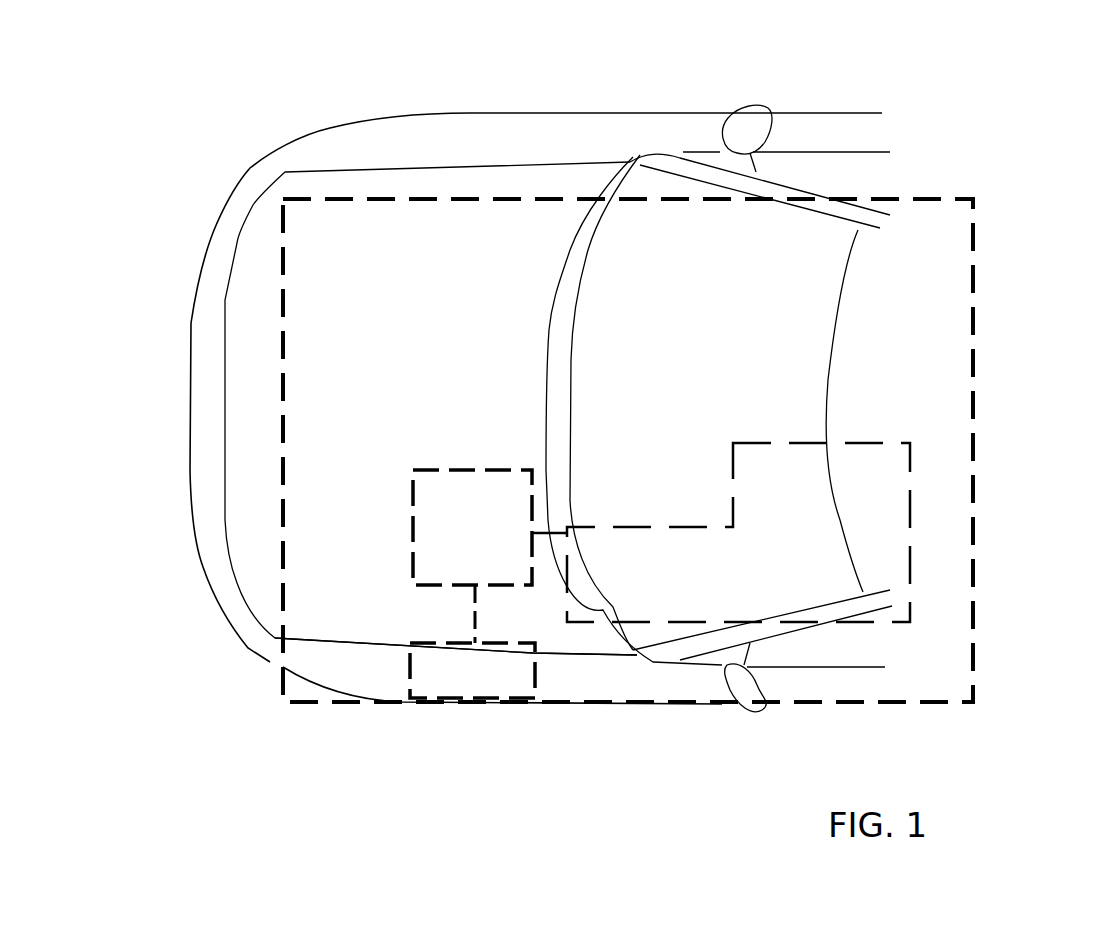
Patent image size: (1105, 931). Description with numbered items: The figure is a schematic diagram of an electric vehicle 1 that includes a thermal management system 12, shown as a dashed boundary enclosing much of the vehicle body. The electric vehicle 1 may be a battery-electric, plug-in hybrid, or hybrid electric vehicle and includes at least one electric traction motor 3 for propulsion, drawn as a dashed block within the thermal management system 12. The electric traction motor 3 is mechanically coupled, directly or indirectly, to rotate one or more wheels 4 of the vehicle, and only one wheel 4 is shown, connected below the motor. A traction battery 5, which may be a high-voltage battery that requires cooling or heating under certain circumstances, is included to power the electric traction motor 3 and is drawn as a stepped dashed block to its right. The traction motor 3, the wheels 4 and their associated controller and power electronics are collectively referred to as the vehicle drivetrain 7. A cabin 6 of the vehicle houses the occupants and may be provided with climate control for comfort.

The electric vehicle 1 is at (180, 118).
The electric traction motor 3 is at (484, 548).
The wheel 4 is at (478, 688).
The traction battery 5 is at (808, 546).
The cabin 6 is at (866, 340).
The vehicle drivetrain 7 is at (555, 655).
The thermal management system 12 is at (973, 458).